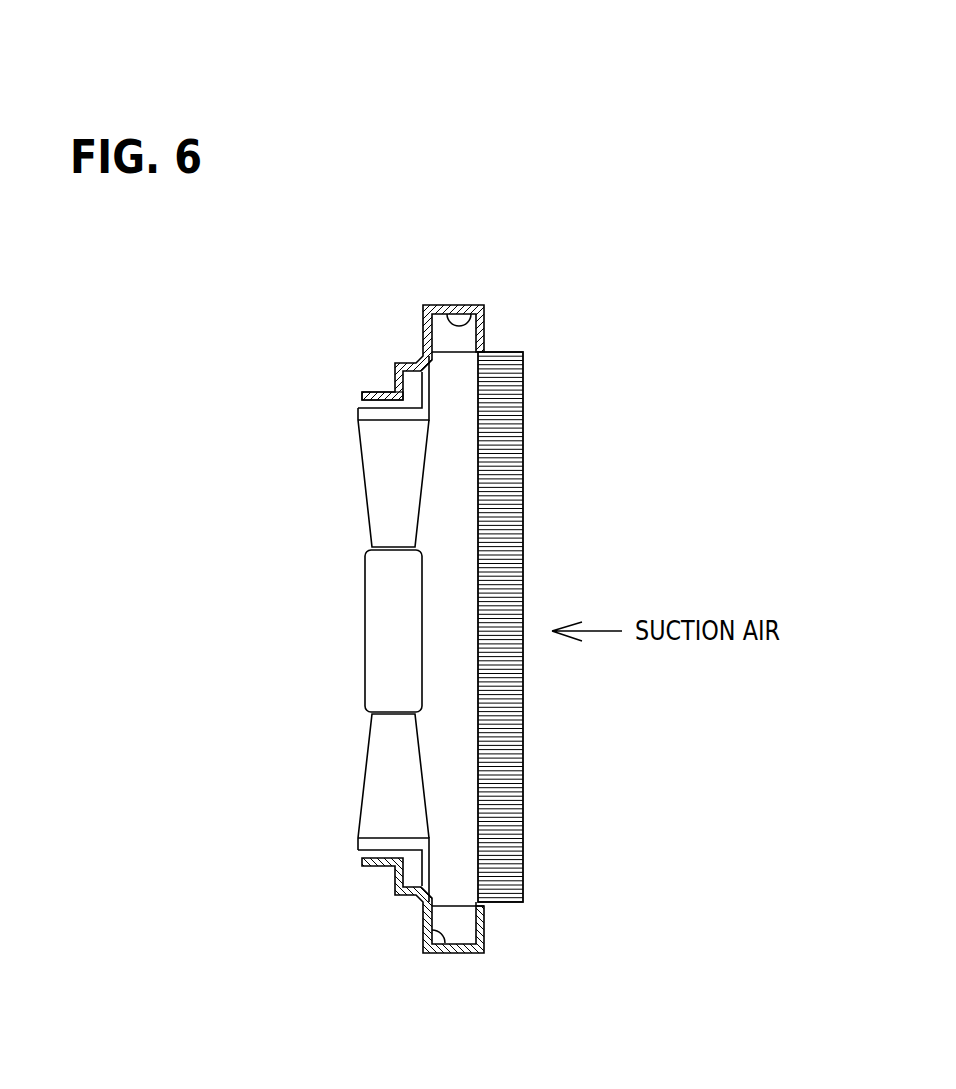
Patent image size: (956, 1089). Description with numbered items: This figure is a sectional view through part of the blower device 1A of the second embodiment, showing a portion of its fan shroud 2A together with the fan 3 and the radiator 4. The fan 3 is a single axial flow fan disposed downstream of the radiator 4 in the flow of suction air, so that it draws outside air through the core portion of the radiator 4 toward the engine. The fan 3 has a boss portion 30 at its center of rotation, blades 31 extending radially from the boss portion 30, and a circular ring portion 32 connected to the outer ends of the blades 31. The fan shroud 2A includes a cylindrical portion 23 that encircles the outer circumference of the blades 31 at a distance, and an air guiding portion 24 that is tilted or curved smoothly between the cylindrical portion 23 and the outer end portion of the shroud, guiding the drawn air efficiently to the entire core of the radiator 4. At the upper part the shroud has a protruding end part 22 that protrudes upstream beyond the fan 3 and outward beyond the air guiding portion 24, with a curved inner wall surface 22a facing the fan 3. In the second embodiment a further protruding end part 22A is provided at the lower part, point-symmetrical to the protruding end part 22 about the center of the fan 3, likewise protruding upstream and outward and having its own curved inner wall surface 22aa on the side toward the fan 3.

The blower device 1A is at (537, 645).
The fan shroud 2A is at (417, 955).
The fan 3 is at (448, 629).
The radiator 4 is at (523, 465).
The protruding end part 22 is at (462, 305).
The inner wall surface 22a is at (483, 316).
The inner wall surface 22aa is at (433, 932).
The protruding end part 22A is at (453, 955).
The cylindrical portion 23 is at (383, 391).
The air guiding portion 24 is at (462, 353).
The boss portion 30 is at (354, 689).
The blades 31 is at (367, 467).
The circular ring portion 32 is at (426, 397).